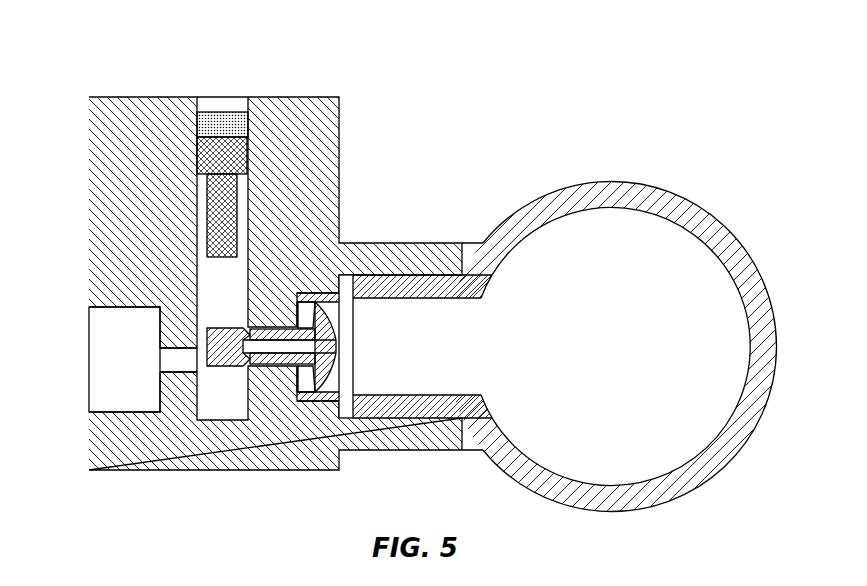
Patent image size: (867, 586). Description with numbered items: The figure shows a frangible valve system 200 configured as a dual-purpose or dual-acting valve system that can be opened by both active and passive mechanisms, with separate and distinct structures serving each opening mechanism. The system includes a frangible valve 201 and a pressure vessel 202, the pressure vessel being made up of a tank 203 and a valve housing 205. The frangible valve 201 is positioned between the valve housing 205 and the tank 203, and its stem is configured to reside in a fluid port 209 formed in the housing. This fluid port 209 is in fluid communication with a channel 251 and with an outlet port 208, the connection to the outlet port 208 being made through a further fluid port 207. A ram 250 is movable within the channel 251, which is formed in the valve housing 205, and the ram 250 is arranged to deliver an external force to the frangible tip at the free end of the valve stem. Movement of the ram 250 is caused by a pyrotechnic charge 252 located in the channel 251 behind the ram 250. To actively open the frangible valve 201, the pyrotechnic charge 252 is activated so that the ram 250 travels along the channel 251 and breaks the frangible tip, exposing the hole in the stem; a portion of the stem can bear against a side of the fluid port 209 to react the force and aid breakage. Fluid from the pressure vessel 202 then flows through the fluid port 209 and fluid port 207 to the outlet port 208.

The frangible valve system 200 is at (402, 266).
The frangible valve 201 is at (350, 348).
The pressure vessel 202 is at (481, 186).
The tank 203 is at (697, 207).
The valve housing 205 is at (340, 148).
The fluid port 207 is at (155, 360).
The outlet port 208 is at (84, 350).
The fluid port 209 is at (244, 376).
The ram 250 is at (207, 200).
The channel 251 is at (248, 398).
The pyrotechnic charge 252 is at (217, 112).